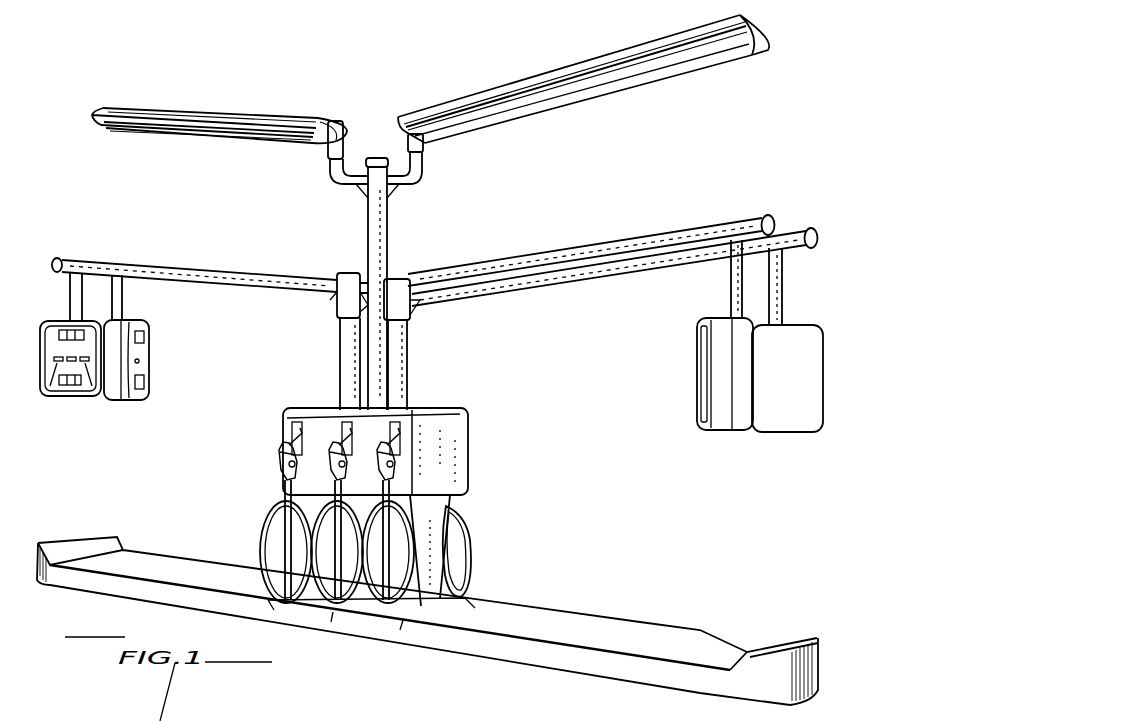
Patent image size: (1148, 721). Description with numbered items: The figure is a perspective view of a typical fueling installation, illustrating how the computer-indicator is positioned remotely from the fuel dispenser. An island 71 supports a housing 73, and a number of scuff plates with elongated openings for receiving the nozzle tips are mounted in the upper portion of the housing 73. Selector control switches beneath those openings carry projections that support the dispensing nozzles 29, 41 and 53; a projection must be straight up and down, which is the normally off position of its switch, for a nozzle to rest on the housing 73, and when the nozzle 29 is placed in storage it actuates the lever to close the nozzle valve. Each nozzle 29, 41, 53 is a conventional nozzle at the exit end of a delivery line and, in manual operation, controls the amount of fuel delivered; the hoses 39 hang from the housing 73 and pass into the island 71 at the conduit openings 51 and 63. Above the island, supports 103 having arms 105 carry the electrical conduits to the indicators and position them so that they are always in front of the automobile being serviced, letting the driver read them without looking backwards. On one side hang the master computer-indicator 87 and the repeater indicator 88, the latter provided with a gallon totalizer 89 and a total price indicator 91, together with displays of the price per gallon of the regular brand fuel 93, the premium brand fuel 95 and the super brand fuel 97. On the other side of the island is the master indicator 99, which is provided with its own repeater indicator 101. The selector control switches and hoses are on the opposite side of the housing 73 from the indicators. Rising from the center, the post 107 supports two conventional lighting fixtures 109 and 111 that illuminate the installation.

The nozzle 29 is at (281, 443).
The hose 39 is at (262, 513).
The nozzle 41 is at (341, 438).
The hose conduit 51 is at (331, 622).
The nozzle 53 is at (403, 444).
The hose conduit 63 is at (400, 630).
The island 71 is at (603, 614).
The housing 73 is at (454, 509).
The master computer-indicator 87 is at (700, 322).
The repeater indicator 88 is at (47, 321).
The gallon totalizer 89 is at (82, 333).
The total price indicator 91 is at (71, 385).
The price per gallon of the regular brand fuel 93 is at (50, 386).
The price per gallon of the premium brand fuel 95 is at (72, 358).
The price per gallon of the super brand fuel 97 is at (92, 386).
The master indicator 99 is at (148, 359).
The repeater indicator 101 is at (802, 325).
The supports 103 is at (407, 344).
The arms 105 is at (198, 262).
The post 107 is at (383, 244).
The lighting fixture 109 is at (267, 117).
The lighting fixture 111 is at (490, 92).